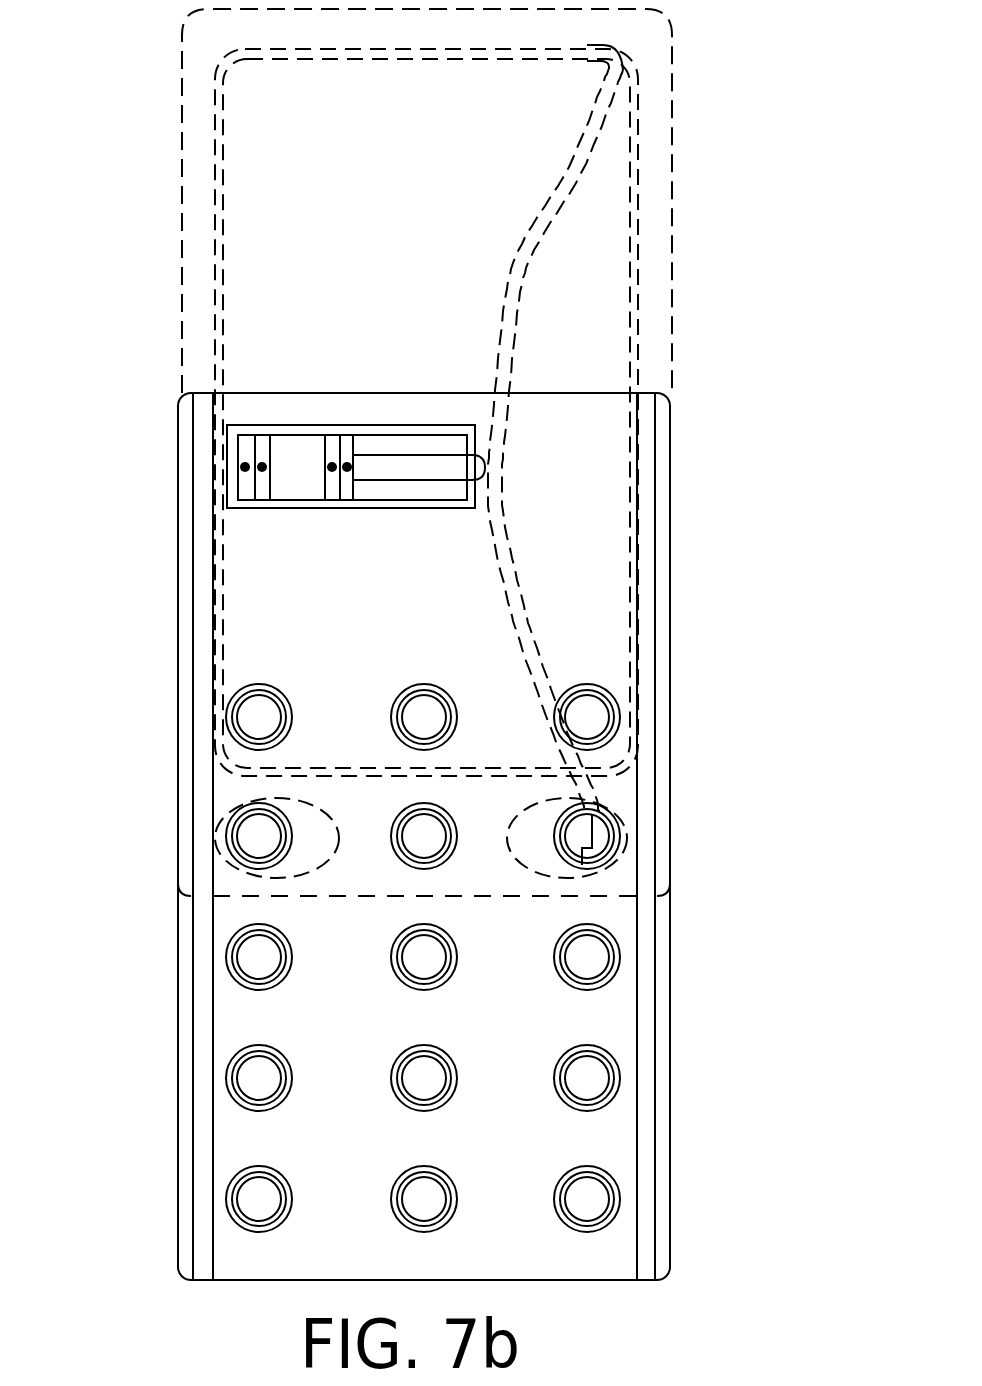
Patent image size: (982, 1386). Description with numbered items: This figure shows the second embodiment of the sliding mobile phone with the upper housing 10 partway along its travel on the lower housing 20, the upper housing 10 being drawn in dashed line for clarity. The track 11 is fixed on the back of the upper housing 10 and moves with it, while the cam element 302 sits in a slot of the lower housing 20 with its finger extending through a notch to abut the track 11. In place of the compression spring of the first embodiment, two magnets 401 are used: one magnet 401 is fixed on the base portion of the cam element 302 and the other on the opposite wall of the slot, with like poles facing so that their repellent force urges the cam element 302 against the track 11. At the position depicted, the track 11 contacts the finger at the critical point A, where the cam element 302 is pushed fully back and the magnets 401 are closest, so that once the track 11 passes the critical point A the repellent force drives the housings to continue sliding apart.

The upper housing 10 is at (672, 122).
The track 11 is at (540, 232).
The lower housing 20 is at (668, 1080).
The cam element 302 is at (380, 468).
The magnets 401 is at (333, 450).
The critical point A is at (503, 468).